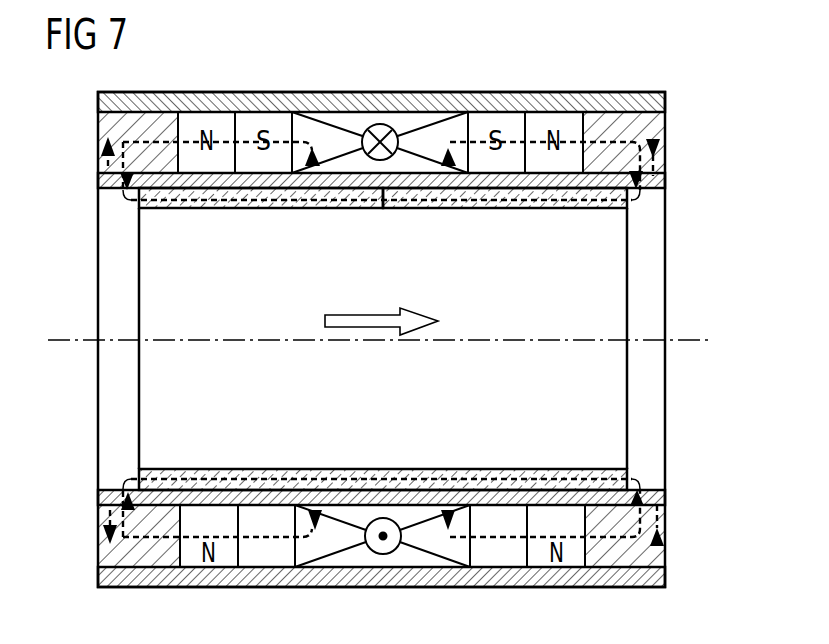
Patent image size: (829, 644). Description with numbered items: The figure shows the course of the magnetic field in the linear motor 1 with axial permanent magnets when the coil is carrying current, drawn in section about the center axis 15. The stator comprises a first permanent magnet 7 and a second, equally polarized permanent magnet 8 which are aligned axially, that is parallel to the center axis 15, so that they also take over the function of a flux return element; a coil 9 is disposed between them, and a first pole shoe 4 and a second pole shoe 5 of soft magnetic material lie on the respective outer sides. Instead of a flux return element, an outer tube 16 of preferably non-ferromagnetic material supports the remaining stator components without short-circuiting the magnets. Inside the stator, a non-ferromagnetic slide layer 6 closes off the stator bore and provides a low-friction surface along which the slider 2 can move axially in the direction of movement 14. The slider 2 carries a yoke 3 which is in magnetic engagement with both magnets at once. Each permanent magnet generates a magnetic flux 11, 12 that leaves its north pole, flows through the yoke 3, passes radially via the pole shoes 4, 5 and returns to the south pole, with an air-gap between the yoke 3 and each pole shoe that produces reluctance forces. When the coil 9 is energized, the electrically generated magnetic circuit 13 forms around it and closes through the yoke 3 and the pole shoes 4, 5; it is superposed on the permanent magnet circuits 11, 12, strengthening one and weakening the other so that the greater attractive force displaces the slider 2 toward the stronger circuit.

The linear motor / actuator 1 is at (681, 151).
The slider 2 is at (609, 291).
The yoke 3 is at (379, 469).
The first pole shoe 4 is at (140, 562).
The second pole shoe 5 is at (628, 560).
The slide layer 6 is at (98, 500).
The first permanent magnet 7 is at (284, 560).
The second permanent magnet 8 is at (512, 560).
The coil 9 is at (392, 560).
The magnetic flux of first permanent magnet 11 is at (224, 209).
The magnetic flux of second permanent magnet 12 is at (550, 209).
The magnetic circuit generated by the coil current 13 is at (315, 92).
The direction of movement arrow 14 is at (365, 316).
The center axis 15 is at (60, 343).
The outer tube 16 is at (335, 582).